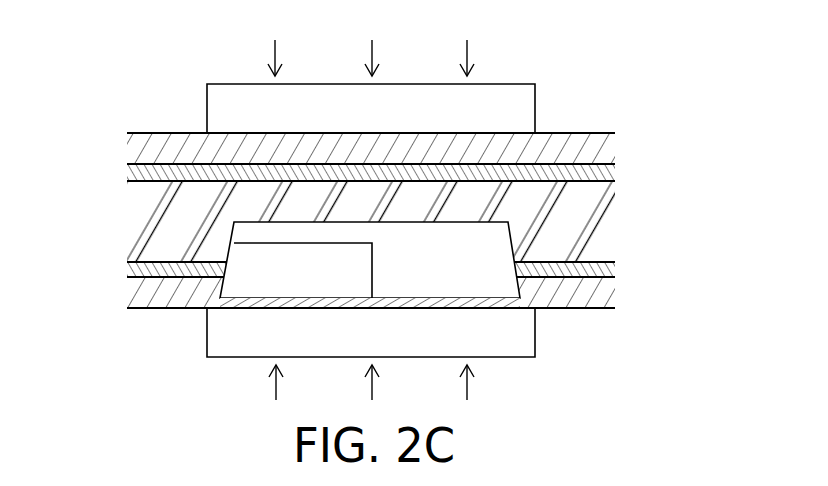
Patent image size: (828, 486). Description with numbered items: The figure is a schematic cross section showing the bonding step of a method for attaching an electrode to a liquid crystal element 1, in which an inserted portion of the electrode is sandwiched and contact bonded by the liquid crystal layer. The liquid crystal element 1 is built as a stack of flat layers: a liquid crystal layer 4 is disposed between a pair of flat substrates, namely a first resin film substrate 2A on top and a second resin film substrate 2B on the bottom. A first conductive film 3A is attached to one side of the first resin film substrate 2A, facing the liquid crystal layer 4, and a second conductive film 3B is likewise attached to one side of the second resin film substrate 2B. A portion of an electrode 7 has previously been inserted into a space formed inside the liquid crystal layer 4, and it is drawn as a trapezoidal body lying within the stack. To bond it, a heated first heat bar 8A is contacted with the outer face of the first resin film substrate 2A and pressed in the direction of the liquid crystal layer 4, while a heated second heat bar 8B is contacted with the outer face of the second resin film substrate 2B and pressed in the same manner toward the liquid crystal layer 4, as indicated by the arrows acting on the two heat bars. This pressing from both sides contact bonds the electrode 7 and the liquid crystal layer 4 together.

The liquid crystal element 1 is at (581, 106).
The first resin film substrate 2A is at (610, 146).
The second resin film substrate 2B is at (613, 290).
The first conductive film 3A is at (613, 172).
The second conductive film 3B is at (613, 263).
The liquid crystal layer 4 is at (137, 213).
The electrode 7 is at (255, 300).
The first heat bar 8A is at (518, 84).
The second heat bar 8B is at (535, 345).